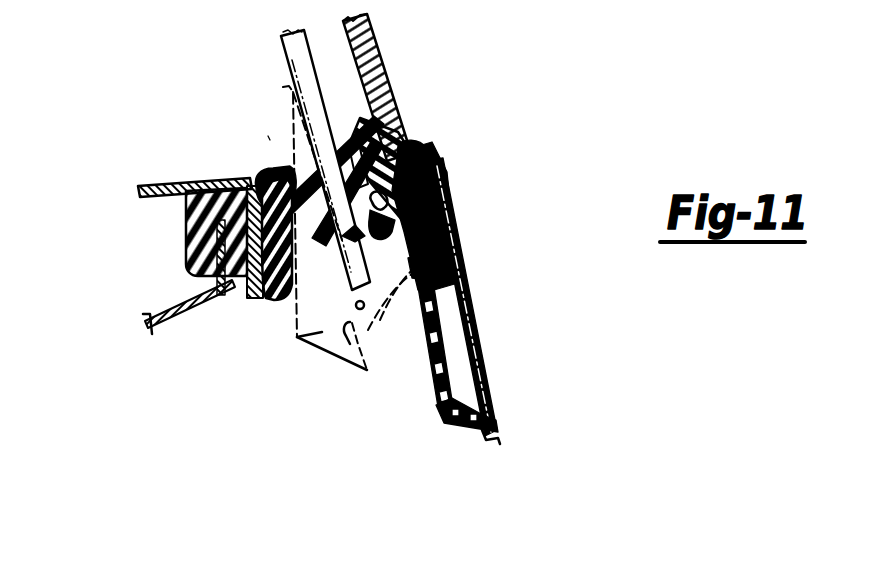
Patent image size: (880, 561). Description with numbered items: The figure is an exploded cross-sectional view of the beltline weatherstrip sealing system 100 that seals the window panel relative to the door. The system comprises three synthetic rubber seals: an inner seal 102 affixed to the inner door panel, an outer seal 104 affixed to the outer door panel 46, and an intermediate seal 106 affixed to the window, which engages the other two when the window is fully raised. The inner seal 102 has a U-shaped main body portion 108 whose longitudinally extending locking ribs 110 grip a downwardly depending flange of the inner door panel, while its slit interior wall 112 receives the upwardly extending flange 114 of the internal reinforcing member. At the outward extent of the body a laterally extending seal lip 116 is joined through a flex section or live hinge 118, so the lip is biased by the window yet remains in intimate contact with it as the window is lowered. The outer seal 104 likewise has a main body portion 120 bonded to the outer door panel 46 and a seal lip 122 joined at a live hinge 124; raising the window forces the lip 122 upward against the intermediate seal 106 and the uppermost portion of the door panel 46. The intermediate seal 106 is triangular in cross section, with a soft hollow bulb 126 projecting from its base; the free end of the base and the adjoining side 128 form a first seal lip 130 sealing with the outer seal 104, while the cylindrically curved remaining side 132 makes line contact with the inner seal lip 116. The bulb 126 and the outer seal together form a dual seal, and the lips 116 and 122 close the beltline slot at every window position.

The sealing system 100 is at (266, 136).
The inner seal 102 is at (288, 298).
The outer seal 104 is at (463, 425).
The intermediate seal 106 is at (430, 180).
The main body portion 108 is at (246, 296).
The locking ribs 110 is at (249, 300).
The interior wall 112 is at (190, 206).
The upwardly extending flange 114 is at (152, 318).
The seal lip 116 is at (358, 126).
The live hinge 118 is at (270, 183).
The main body portion 120 is at (425, 360).
The seal lip 122 is at (432, 268).
The live hinge 124 is at (437, 258).
The hollow bulb 126 is at (428, 158).
The adjoining side 128 is at (424, 182).
The first seal lip 130 is at (420, 224).
The remaining side 132 is at (316, 225).
The outer door panel 46 is at (481, 368).